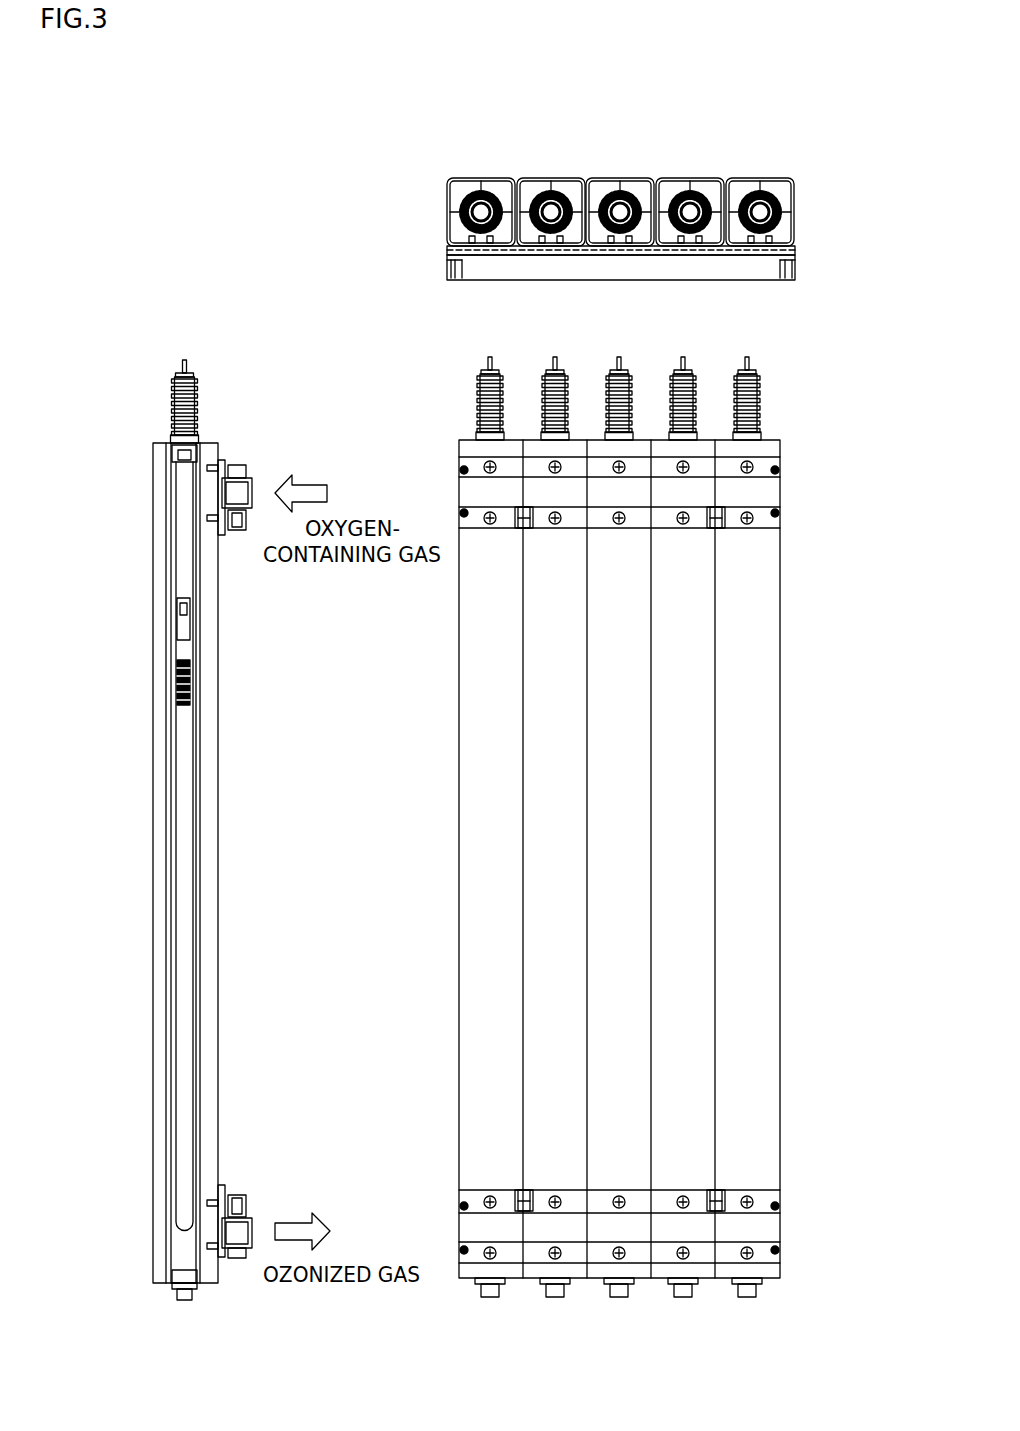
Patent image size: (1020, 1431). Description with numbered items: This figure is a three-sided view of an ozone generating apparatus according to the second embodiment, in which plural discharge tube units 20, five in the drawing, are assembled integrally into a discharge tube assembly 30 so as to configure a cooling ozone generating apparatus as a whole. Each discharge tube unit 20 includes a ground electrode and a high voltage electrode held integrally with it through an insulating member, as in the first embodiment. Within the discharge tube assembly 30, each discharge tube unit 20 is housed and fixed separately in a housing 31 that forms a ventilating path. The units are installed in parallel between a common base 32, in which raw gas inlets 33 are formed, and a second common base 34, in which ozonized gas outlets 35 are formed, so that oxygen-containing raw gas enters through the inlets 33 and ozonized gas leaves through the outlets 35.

The discharge tube unit 20 is at (493, 188).
The discharge tube assembly 30 is at (793, 200).
The housing 31 is at (447, 192).
The common base 32 is at (447, 260).
The raw gas inlet 33 is at (520, 529).
The common base 34 is at (773, 1227).
The ozonized gas outlet 35 is at (523, 1190).